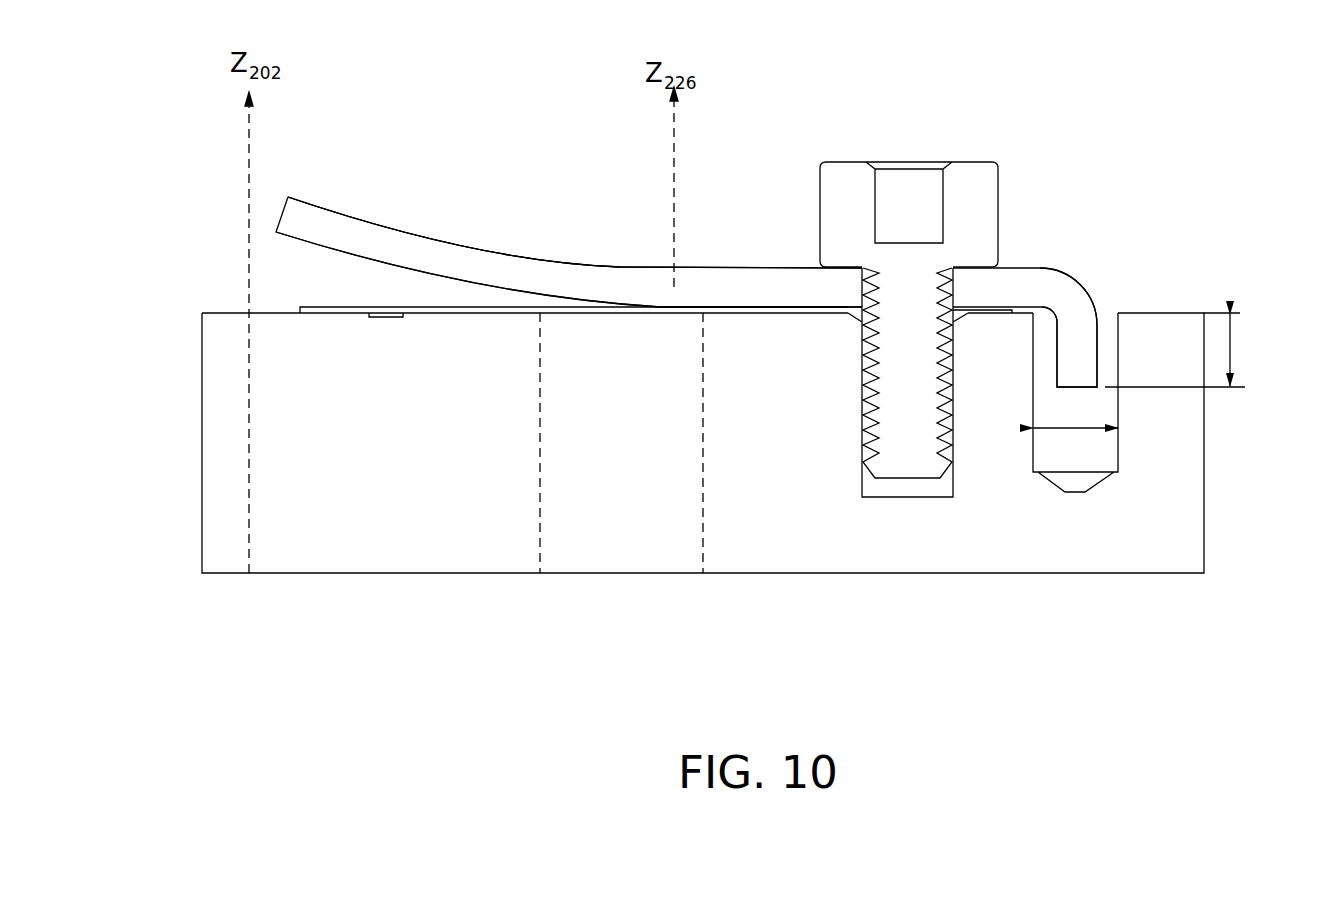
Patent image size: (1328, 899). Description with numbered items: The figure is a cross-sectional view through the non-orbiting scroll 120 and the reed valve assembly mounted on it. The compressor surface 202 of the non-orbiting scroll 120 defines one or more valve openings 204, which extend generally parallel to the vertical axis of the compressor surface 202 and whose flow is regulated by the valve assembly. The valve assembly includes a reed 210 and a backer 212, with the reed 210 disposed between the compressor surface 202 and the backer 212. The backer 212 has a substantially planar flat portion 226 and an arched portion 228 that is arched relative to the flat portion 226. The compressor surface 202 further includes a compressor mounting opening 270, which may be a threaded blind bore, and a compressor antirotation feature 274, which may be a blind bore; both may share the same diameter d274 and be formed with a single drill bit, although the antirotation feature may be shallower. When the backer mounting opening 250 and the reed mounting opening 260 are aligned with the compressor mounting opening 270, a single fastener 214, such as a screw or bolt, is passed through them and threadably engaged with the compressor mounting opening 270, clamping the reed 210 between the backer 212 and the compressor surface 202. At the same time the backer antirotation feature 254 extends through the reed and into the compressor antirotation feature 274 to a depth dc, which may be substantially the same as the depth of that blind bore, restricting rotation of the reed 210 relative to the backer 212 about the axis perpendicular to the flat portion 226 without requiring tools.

The non-orbiting scroll 120 is at (220, 456).
The compressor surface 202 is at (602, 263).
The valve opening 204 is at (540, 493).
The reed 210 is at (327, 307).
The backer 212 is at (313, 217).
The fastener 214 is at (975, 186).
The flat portion 226 is at (770, 263).
The arched portion 228 is at (398, 226).
The backer mounting opening 250 is at (955, 318).
The backer antirotation feature 254 is at (1075, 330).
The reed mounting opening 260 is at (612, 307).
The compressor mounting opening 270 is at (862, 432).
The compressor antirotation feature 274 is at (1113, 452).
The diameter d274 is at (1075, 430).
The depth dc is at (1233, 352).